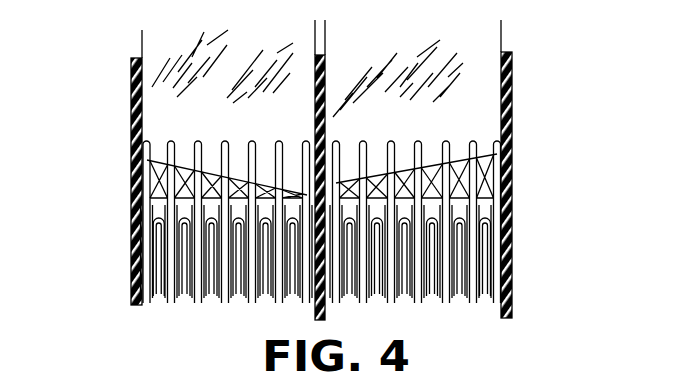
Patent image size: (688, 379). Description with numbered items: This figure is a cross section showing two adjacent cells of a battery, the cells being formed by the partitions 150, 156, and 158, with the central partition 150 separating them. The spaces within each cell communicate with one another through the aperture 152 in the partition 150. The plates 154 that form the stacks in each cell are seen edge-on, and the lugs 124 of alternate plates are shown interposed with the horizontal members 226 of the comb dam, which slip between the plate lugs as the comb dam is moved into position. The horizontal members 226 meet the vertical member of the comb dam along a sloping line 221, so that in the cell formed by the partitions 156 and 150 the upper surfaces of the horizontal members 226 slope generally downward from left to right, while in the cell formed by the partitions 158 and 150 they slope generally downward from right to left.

The lugs 124 is at (131, 196).
The partition 150 is at (325, 82).
The aperture 152 is at (326, 160).
The plates 154 is at (312, 290).
The partition 156 is at (131, 95).
The partition 158 is at (512, 109).
The sloping line 221 is at (306, 140).
The horizontal members 226 is at (131, 223).